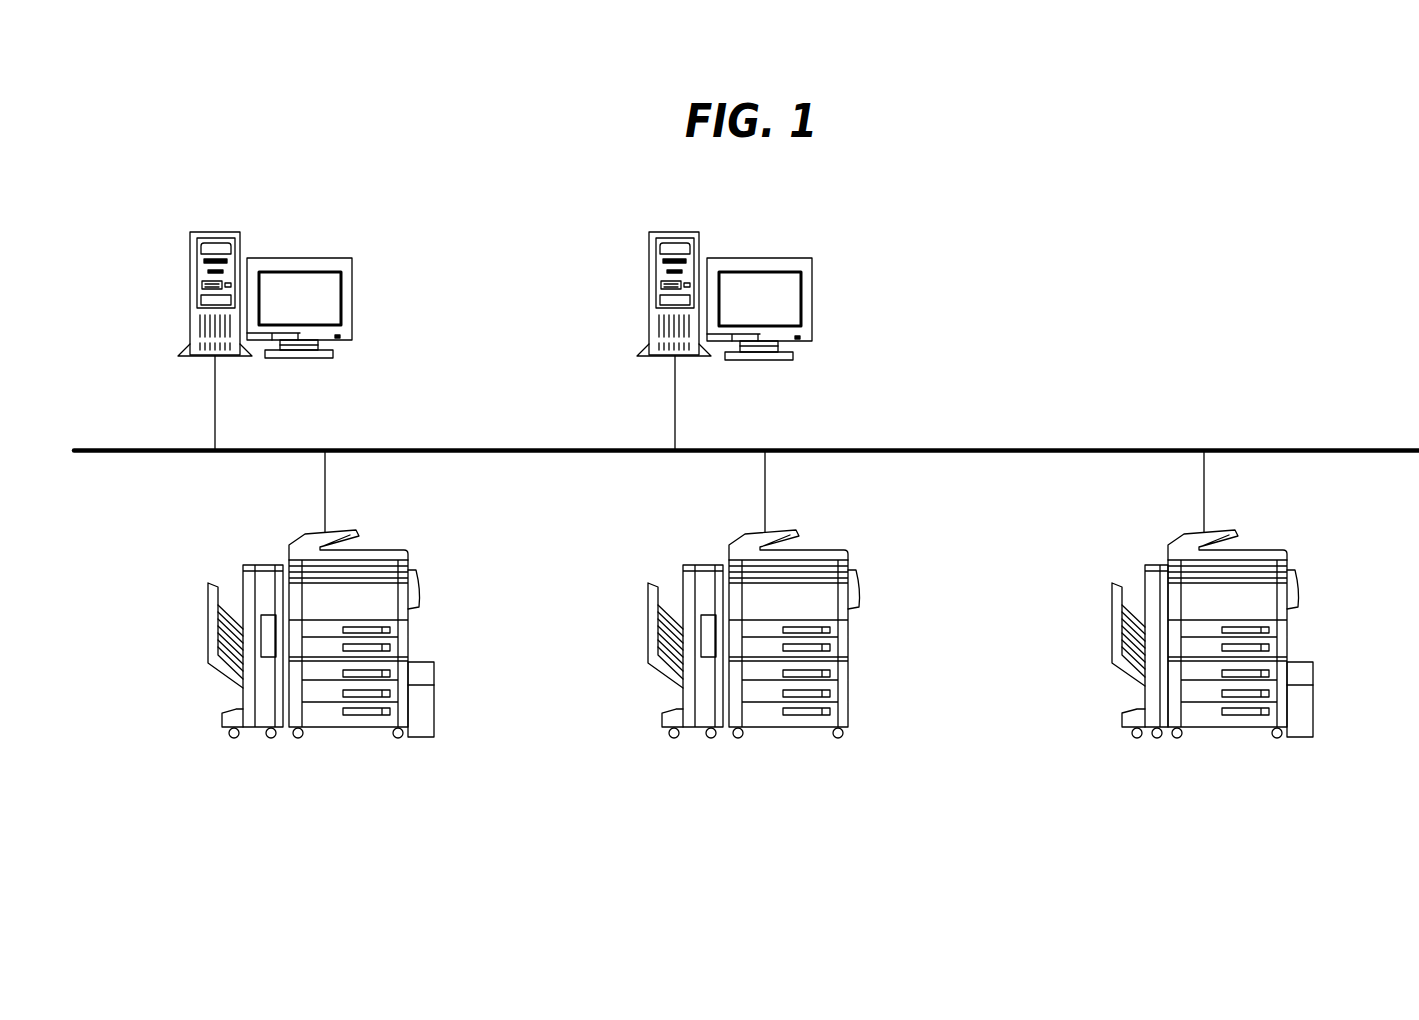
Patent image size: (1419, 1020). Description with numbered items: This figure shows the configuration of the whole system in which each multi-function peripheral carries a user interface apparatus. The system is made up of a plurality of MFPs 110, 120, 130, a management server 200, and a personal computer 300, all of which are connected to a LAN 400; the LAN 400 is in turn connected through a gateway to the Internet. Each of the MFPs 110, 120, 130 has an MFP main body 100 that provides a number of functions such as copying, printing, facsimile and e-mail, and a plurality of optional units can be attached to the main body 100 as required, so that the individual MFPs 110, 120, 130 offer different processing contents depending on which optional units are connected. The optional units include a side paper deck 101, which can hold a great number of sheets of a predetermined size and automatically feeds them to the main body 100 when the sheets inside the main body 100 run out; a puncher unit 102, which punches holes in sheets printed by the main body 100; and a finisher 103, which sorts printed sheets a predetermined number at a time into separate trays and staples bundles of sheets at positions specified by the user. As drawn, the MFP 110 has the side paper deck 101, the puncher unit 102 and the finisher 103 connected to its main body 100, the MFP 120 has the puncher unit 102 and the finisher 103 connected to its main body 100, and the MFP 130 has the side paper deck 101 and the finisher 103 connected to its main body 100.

The MFP main body 100 is at (418, 583).
The side paper deck 101 is at (432, 672).
The puncher unit 102 is at (265, 563).
The finisher 103 is at (208, 616).
The MFP 110 is at (326, 632).
The MFP 120 is at (766, 632).
The MFP 130 is at (1217, 632).
The management server 200 is at (758, 258).
The personal computer 300 is at (292, 258).
The LAN 400 is at (1107, 449).